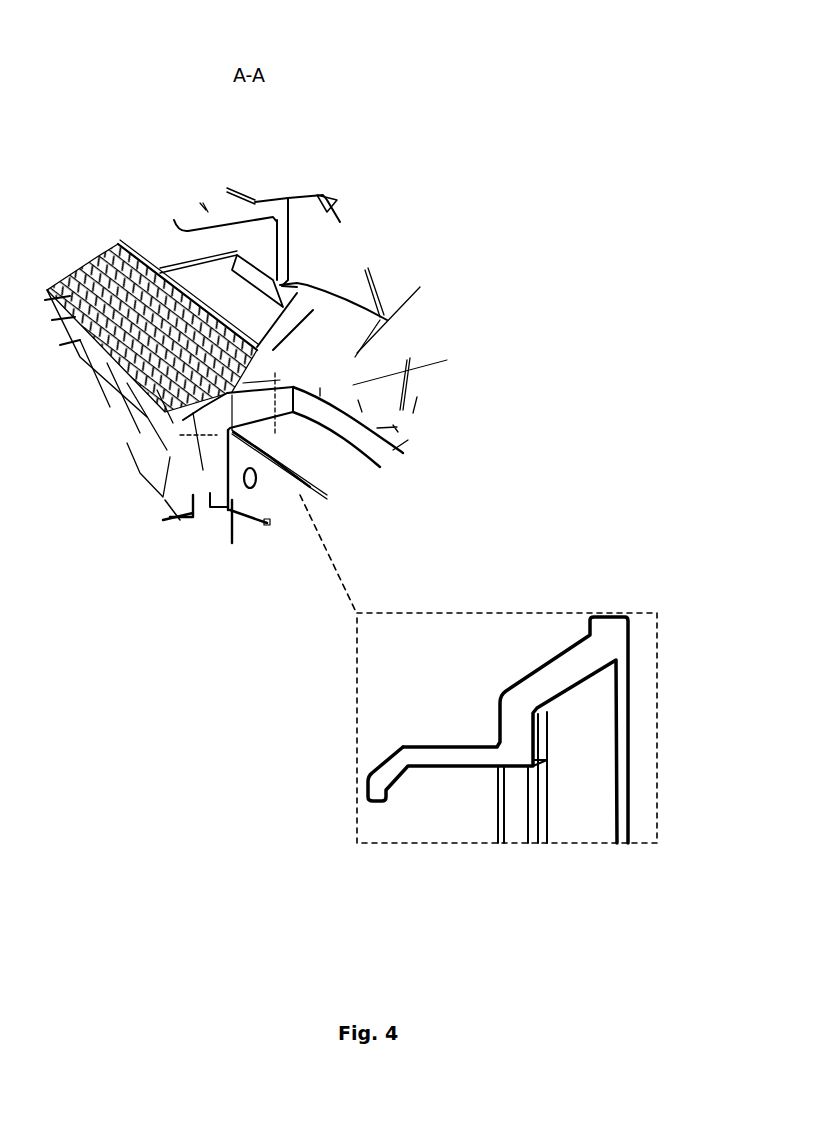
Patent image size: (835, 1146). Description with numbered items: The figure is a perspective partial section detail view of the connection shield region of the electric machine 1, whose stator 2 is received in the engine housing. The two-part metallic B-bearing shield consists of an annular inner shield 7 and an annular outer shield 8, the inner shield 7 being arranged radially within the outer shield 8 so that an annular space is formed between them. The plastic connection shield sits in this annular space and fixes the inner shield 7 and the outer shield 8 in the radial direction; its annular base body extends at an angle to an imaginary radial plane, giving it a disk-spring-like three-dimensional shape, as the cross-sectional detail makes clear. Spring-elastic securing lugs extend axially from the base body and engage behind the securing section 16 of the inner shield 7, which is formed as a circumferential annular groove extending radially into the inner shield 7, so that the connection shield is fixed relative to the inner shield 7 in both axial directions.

The electric machine 1 is at (150, 112).
The stator 2 is at (97, 253).
The inner shield 7 is at (170, 530).
The outer shield 8 is at (305, 248).
The securing section 16 is at (232, 520).